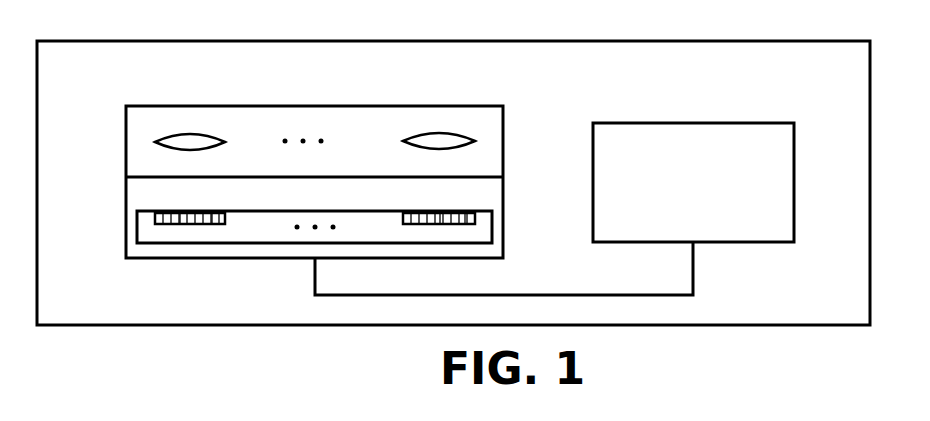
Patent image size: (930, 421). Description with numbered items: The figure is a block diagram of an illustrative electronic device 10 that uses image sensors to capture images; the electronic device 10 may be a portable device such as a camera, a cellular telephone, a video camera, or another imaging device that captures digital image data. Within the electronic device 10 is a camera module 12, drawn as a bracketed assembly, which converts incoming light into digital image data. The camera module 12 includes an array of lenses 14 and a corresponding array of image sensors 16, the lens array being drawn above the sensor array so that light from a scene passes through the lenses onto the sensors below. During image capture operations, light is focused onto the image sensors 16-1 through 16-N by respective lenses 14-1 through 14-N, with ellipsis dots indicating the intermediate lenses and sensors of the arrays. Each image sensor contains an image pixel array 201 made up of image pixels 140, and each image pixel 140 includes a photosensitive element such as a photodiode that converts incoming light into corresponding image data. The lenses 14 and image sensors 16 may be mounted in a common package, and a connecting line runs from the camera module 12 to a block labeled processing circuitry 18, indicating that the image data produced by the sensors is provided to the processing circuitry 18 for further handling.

The electronic device 10 is at (138, 46).
The camera module 12 is at (113, 107).
The array of lenses 14 is at (343, 112).
The lens 14-1 is at (205, 133).
The lens 14-N is at (428, 148).
The array of image sensors 16 is at (262, 233).
The image sensor 16-1 is at (185, 225).
The image sensor 16-N is at (445, 225).
The processing circuitry 18 is at (716, 135).
The image pixel 140 is at (200, 214).
The image pixel array 201 is at (215, 211).